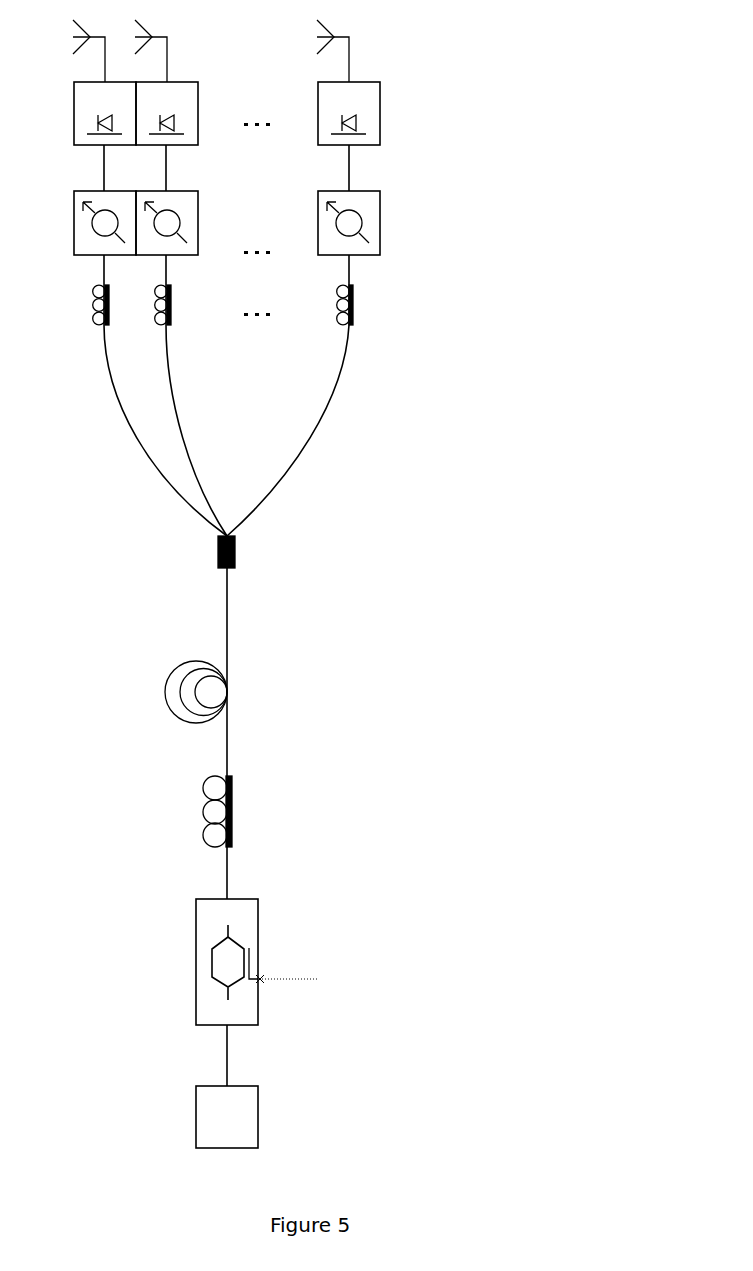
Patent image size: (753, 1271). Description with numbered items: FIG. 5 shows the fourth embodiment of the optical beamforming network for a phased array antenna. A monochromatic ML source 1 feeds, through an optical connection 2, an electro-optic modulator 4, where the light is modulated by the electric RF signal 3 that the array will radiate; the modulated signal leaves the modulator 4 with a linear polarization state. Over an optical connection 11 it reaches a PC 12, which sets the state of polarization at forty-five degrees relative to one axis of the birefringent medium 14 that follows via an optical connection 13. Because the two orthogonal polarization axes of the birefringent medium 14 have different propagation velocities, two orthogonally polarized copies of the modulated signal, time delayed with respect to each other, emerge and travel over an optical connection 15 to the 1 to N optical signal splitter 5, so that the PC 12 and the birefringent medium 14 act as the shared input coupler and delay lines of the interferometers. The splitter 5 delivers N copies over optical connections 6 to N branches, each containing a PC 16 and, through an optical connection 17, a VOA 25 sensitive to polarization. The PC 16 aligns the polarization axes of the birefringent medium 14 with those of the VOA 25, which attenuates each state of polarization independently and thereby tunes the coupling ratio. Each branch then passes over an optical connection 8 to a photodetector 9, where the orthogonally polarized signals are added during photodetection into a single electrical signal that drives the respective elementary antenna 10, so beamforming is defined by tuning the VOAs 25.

The ML source 1 is at (273, 1118).
The optical connection 2 is at (242, 1056).
The electric RF signal 3 is at (335, 979).
The electro-optic modulator 4 is at (272, 917).
The 1 to N optical signal splitter 5 is at (243, 550).
The optical connection 6 is at (350, 417).
The optical connection 8 is at (365, 165).
The photodetector 9 is at (565, 110).
The elementary antenna 10 is at (365, 41).
The optical connection 11 is at (245, 869).
The PC 12 is at (245, 810).
The optical connection 13 is at (245, 743).
The birefringent medium 14 is at (243, 695).
The optical connection 15 is at (245, 620).
The PC 16 is at (365, 302).
The optical connection 17 is at (362, 270).
The VOA sensitive to polarization 25 is at (565, 220).